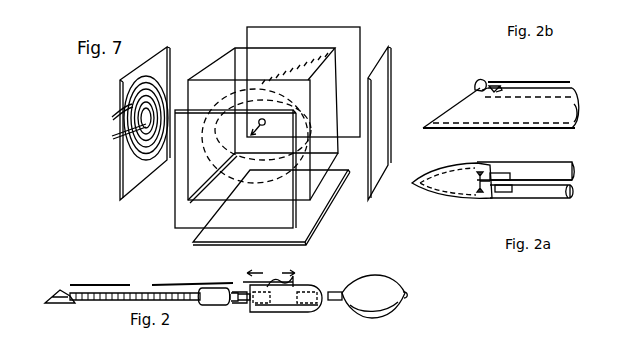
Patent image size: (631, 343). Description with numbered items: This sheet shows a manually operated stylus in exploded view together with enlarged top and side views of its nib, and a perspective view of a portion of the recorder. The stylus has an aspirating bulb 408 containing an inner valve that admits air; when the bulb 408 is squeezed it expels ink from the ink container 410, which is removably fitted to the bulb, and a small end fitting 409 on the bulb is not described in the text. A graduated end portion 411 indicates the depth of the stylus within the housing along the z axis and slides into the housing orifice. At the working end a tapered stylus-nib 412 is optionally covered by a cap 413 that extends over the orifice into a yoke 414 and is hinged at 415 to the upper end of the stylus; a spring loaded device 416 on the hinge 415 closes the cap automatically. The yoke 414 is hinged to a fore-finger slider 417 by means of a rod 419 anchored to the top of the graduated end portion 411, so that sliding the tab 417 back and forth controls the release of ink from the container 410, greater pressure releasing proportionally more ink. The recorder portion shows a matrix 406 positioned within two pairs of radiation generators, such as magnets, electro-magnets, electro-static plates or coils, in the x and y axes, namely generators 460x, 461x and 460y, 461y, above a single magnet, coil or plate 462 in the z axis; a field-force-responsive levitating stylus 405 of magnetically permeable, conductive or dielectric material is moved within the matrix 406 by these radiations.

In FIG. 7, the levitating stylus 405 is at (263, 135).
In FIG. 7, the matrix 406 is at (203, 67).
In FIG. 7, the x-axis radiation generator 460x is at (113, 117).
In FIG. 7, the y-axis radiation generator 460y is at (378, 155).
In FIG. 7, the x-axis radiation generator 461x is at (183, 197).
In FIG. 7, the y-axis radiation generator 461y is at (362, 33).
In FIG. 7, the z-axis magnet, electro-magnet, coil or electro-static plate 462 is at (322, 220).
In FIG. 2, the aspirating bulb 408 is at (383, 275).
In FIG. 2, the valve 409 is at (408, 295).
In FIG. 2, the ink container 410 is at (283, 308).
In FIG. 2, the graduated end portion 411 is at (128, 293).
In FIG. 2, the stylus-nib 412 is at (52, 290).
In FIG. 2A, the cap 413 is at (462, 187).
In FIG. 2B, the yoke 414 is at (483, 82).
In FIG. 2B, the hinge 415 is at (492, 82).
In FIG. 2A, the hinge 415 is at (495, 173).
In FIG. 2A, the spring loaded device 416 is at (500, 192).
In FIG. 2, the fore-finger slider 417 is at (297, 282).
In FIG. 2B, the rod 419 is at (548, 80).
In FIG. 2, the rod 419 is at (172, 285).